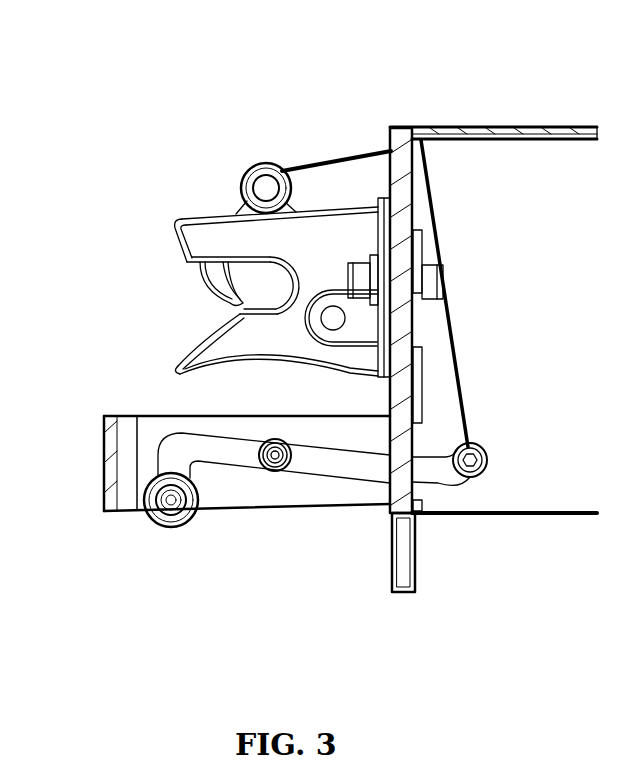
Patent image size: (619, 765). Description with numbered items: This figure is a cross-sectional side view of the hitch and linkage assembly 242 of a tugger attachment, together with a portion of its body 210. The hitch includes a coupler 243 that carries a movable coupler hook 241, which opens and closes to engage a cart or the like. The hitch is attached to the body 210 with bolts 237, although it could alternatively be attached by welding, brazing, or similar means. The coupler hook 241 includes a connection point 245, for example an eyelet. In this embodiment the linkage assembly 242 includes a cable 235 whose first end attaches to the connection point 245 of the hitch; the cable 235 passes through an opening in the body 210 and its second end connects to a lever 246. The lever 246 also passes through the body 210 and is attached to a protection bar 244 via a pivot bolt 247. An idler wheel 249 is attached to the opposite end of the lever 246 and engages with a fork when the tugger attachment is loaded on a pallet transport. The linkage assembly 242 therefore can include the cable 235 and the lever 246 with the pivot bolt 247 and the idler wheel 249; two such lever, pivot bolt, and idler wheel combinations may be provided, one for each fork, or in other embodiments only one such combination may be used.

The body 210 is at (590, 188).
The cable 235 is at (333, 137).
The bolts 237 is at (342, 257).
The coupler hook 241 is at (205, 293).
The linkage assembly 242 is at (307, 487).
The coupler 243 is at (323, 205).
The protection bar 244 is at (103, 443).
The connection point 245 is at (242, 190).
The lever 246 is at (230, 470).
The pivot bolt 247 is at (253, 431).
The idler wheel 249 is at (146, 522).